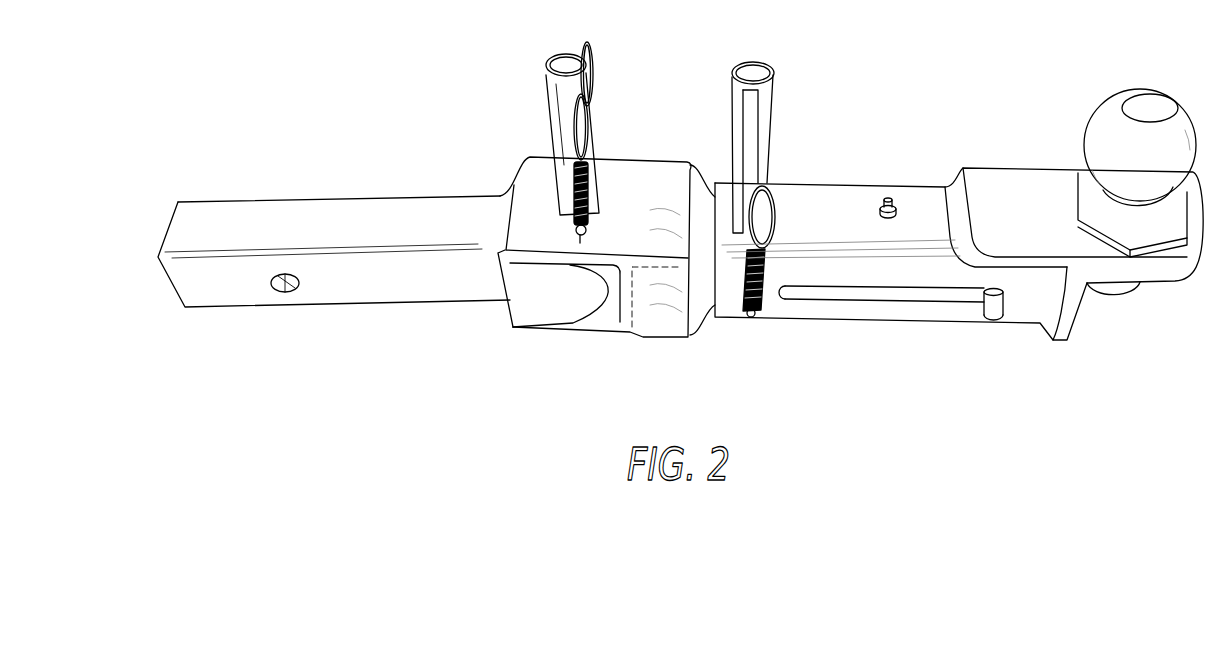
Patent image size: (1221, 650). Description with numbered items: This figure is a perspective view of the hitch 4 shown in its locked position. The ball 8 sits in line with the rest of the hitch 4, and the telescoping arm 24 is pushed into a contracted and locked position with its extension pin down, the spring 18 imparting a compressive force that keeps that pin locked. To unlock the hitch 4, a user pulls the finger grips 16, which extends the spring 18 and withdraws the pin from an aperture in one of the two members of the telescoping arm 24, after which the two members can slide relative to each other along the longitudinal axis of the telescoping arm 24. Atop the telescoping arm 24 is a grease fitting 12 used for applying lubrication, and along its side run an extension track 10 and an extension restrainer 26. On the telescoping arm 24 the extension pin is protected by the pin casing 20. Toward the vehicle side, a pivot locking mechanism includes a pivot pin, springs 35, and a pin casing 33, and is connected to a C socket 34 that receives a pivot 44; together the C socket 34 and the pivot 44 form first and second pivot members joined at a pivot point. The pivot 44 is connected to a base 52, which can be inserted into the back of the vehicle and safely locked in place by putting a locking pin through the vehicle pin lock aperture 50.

The hitch 4 is at (224, 148).
The ball 8 is at (1108, 118).
The extension track 10 is at (908, 297).
The grease fitting 12 is at (888, 198).
The finger grips 16 is at (598, 102).
The spring 18 is at (763, 293).
The pin casing 20 is at (772, 72).
The telescoping arm 24 is at (861, 273).
The extension restrainer 26 is at (1045, 318).
The pin casing 33 is at (558, 122).
The C socket 34 is at (678, 165).
The springs 35 is at (592, 178).
The pivot 44 is at (530, 307).
The vehicle pin lock aperture 50 is at (303, 306).
The base 52 is at (357, 299).